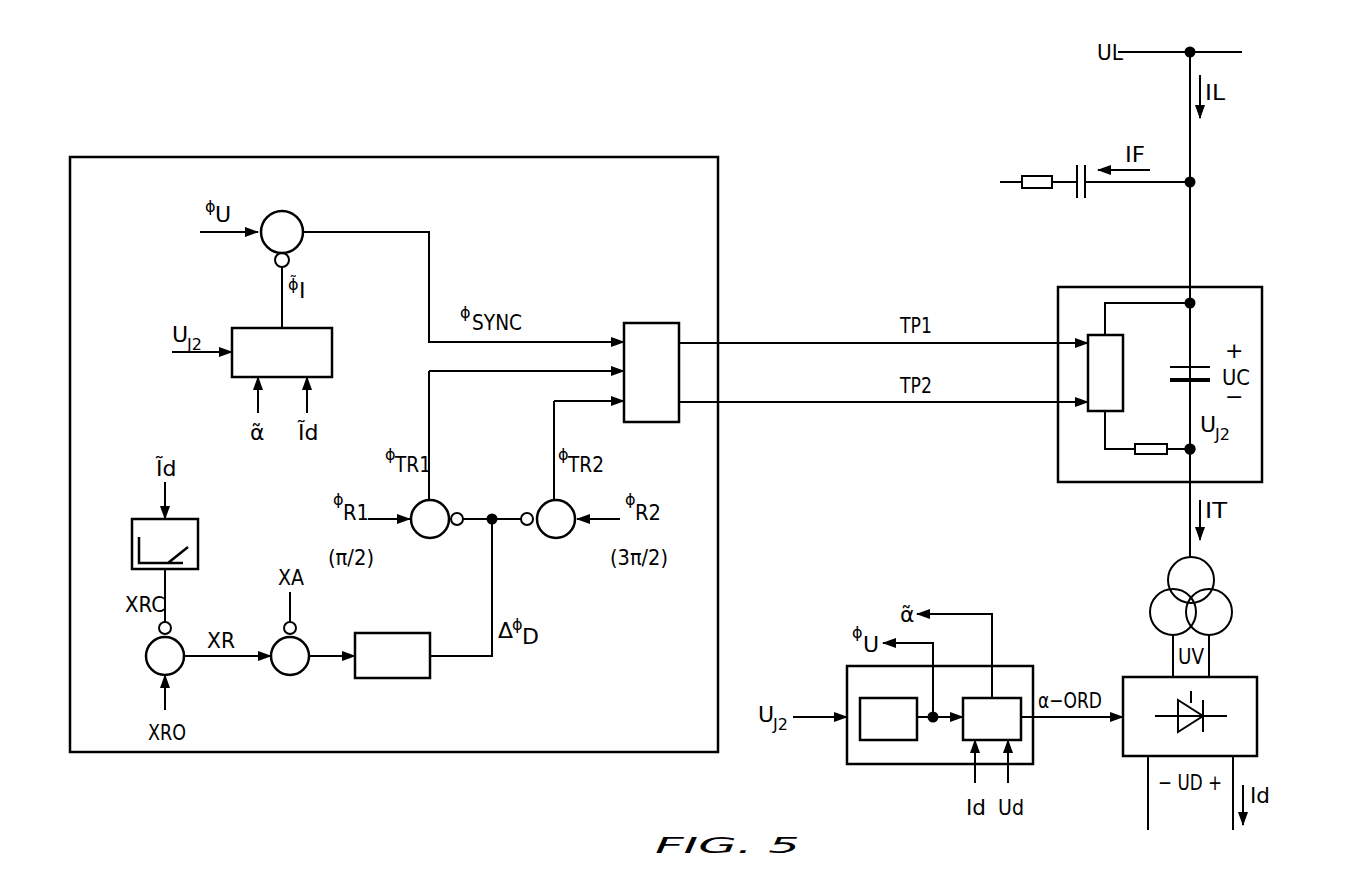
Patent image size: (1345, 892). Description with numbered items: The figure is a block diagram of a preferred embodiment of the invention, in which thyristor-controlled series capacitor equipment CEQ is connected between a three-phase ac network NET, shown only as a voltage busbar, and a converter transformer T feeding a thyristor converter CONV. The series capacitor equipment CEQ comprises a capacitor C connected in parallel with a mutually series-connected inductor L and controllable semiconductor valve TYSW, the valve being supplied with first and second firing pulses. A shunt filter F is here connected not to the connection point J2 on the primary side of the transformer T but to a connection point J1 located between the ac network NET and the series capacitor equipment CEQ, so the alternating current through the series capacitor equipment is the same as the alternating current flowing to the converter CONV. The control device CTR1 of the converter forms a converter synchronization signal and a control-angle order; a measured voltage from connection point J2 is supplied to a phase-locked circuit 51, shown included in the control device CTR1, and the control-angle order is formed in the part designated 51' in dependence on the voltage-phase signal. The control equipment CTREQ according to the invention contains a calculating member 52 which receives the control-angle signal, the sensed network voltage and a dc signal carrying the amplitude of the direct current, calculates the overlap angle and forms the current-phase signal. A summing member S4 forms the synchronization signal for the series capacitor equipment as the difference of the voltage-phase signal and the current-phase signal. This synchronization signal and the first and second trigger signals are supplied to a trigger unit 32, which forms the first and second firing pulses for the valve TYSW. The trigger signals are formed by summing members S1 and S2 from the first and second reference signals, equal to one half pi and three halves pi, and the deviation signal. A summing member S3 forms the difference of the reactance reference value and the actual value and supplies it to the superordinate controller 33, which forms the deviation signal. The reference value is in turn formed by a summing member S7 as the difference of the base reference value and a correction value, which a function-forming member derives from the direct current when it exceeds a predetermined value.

The control equipment CTREQ is at (683, 157).
The summing member S4 is at (300, 220).
The calculating member 52 is at (332, 352).
The trigger unit 32 is at (653, 323).
The summing member S1 is at (432, 540).
The summing member S2 is at (558, 540).
The summing member S3 is at (304, 640).
The summing member S7 is at (180, 640).
The superordinate controller 33 is at (393, 678).
The phase-locked circuit 51 is at (888, 751).
The control-angle forming part of the control device 51' is at (974, 751).
The control device of the converter CTR1 is at (1015, 666).
The thyristor-controlled series capacitor equipment CEQ is at (1090, 482).
The controllable semiconductor valve TYSW is at (1095, 411).
The series capacitor C is at (1178, 382).
The inductor L is at (1148, 455).
The connection point J1 is at (1196, 182).
The connection point J2 is at (1196, 449).
The shunt filter F is at (1068, 190).
The converter transformer T is at (1165, 582).
The thyristor converter CONV is at (1257, 688).
The three-phase ac network NET is at (1152, 52).